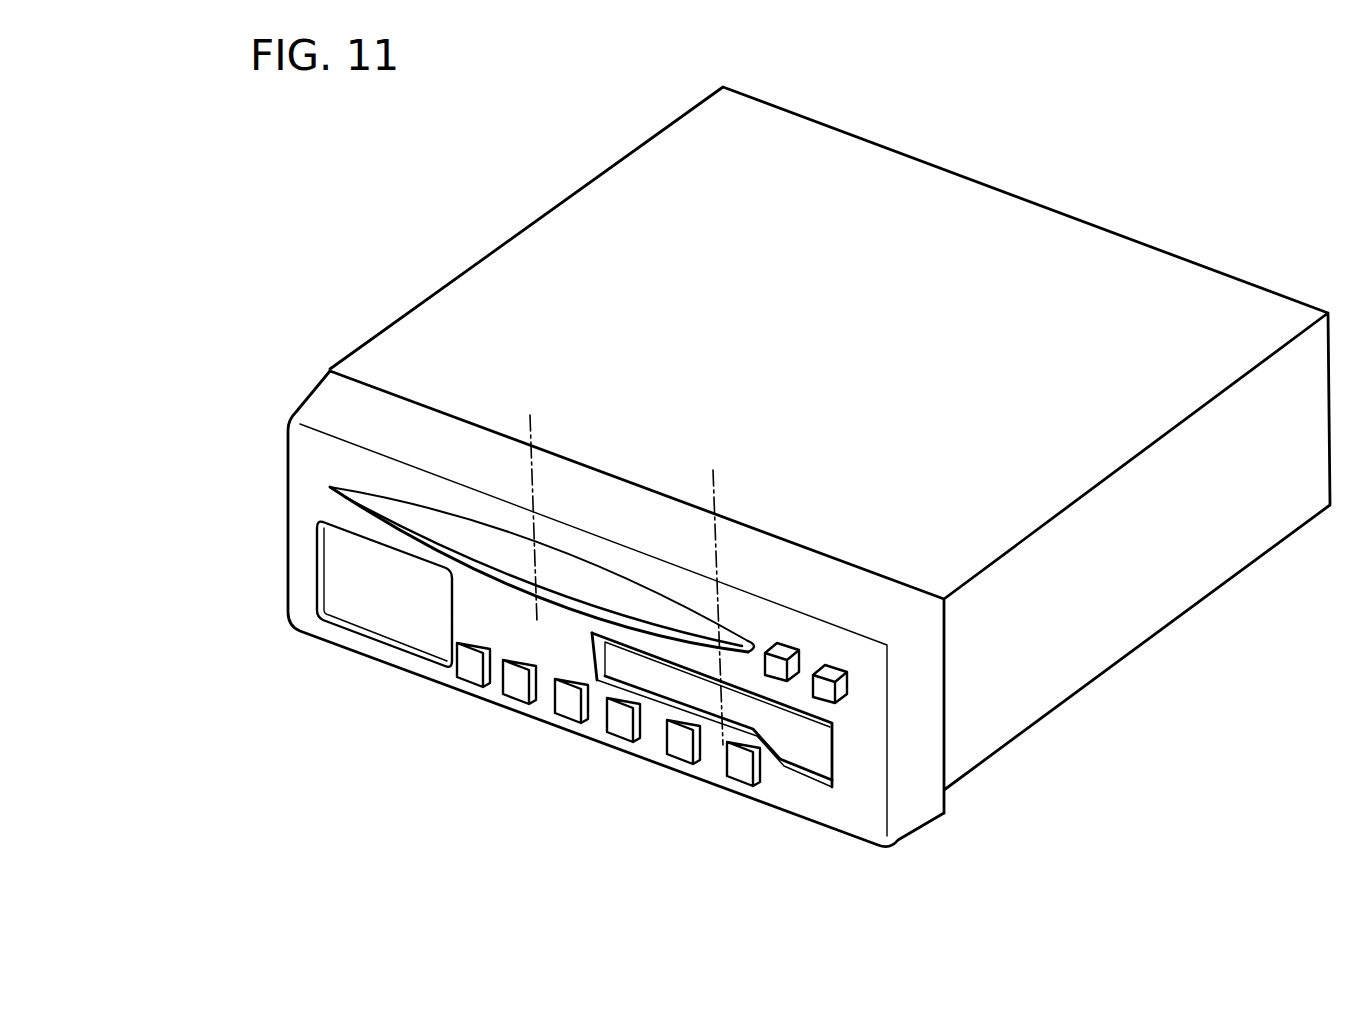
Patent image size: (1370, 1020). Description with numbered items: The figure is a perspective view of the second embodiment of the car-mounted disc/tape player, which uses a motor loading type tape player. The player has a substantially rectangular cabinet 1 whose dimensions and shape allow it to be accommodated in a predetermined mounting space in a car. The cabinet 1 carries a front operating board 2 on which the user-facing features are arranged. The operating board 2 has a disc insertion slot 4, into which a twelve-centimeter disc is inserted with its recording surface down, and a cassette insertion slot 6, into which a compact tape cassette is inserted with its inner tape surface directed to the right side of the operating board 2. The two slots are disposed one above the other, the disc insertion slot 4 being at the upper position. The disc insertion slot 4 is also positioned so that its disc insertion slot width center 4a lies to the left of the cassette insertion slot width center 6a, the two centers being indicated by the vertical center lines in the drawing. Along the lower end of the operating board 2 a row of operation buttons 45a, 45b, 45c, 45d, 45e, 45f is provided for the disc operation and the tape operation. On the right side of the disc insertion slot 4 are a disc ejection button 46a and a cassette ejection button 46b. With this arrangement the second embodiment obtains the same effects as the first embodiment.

The cabinet 1 is at (1150, 625).
The front operating board 2 is at (915, 820).
The disc insertion slot 4 is at (382, 502).
The disc insertion slot width center 4a is at (533, 433).
The cassette insertion slot 6 is at (812, 760).
The cassette insertion slot width center 6a is at (717, 500).
The operation button 45a is at (470, 676).
The operation button 45b is at (520, 694).
The operation button 45c is at (578, 715).
The operation button 45d is at (630, 733).
The operation button 45e is at (688, 756).
The operation button 45f is at (745, 778).
The disc ejection button 46a is at (786, 648).
The cassette ejection button 46b is at (834, 669).